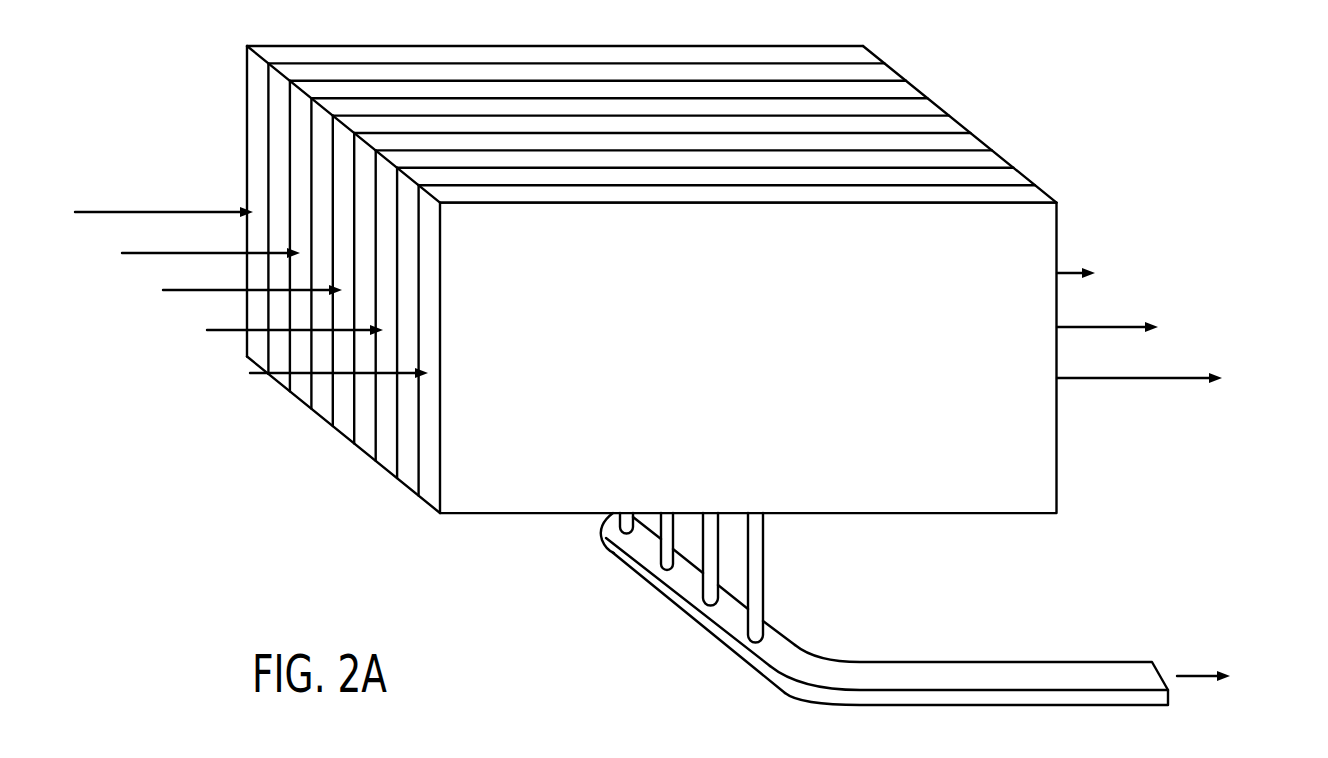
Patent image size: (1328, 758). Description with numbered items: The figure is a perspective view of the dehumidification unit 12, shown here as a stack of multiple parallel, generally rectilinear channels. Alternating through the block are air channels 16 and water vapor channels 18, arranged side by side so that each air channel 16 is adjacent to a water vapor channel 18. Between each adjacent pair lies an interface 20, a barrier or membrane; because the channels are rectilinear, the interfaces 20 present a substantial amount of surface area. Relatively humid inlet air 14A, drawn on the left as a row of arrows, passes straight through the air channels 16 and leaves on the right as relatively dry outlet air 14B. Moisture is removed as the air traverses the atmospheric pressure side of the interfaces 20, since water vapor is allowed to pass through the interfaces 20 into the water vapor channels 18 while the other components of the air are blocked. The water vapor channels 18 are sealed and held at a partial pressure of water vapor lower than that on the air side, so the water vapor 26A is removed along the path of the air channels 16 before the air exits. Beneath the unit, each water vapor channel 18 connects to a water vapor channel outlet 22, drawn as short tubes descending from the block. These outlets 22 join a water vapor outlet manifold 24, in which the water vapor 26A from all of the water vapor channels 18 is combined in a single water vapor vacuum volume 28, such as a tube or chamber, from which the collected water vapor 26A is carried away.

The dehumidification unit 12 is at (1148, 95).
The inlet air 14A is at (140, 213).
The outlet air 14B is at (1068, 273).
The air channels 16 is at (860, 56).
The water vapor channels 18 is at (343, 108).
The interface 20 is at (672, 115).
The water vapor channel outlet 22 is at (670, 560).
The water vapor outlet manifold 24 is at (680, 600).
The water vapor 26A is at (1197, 672).
The water vapor vacuum volume 28 is at (1046, 668).